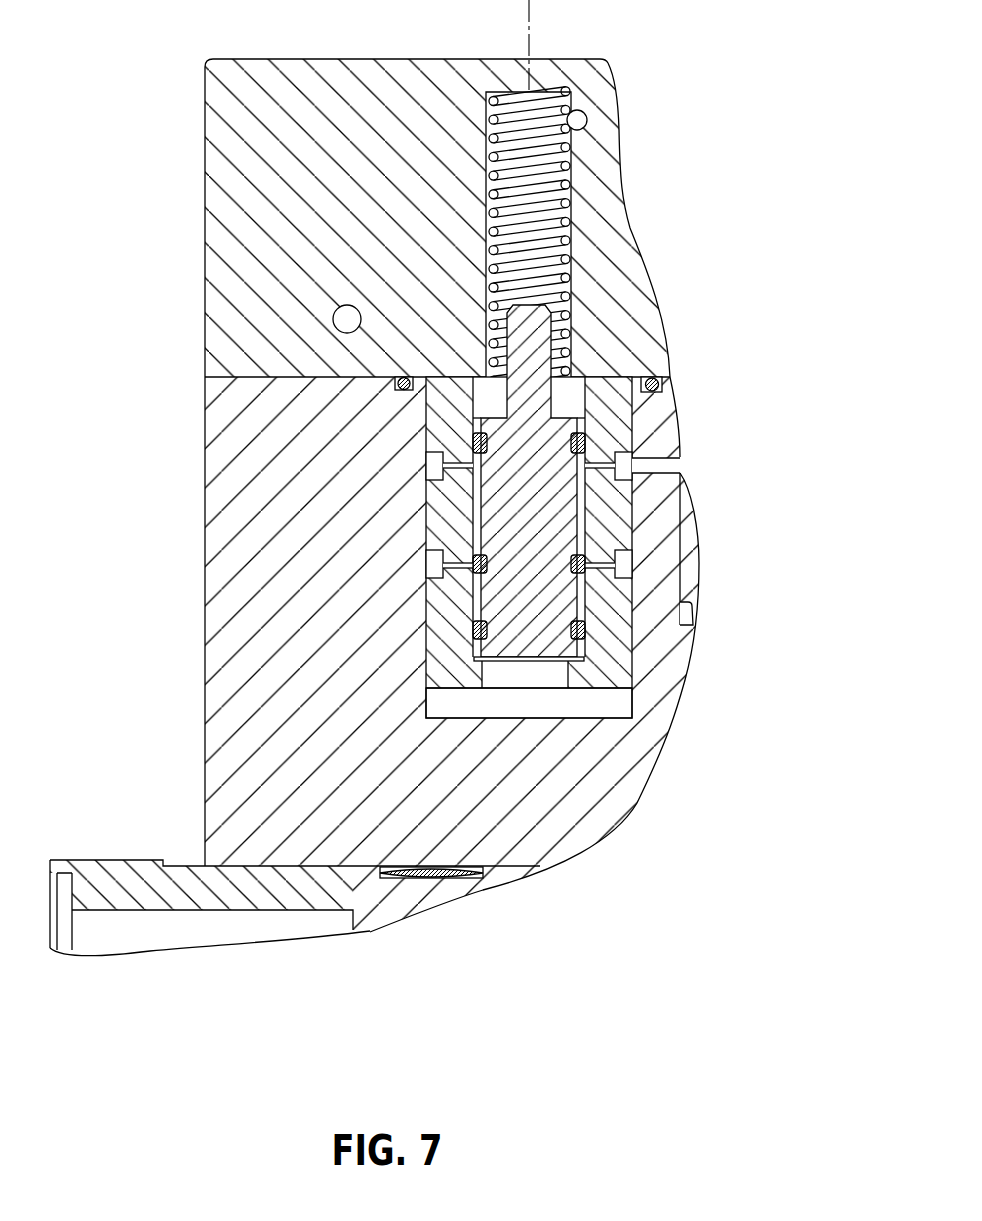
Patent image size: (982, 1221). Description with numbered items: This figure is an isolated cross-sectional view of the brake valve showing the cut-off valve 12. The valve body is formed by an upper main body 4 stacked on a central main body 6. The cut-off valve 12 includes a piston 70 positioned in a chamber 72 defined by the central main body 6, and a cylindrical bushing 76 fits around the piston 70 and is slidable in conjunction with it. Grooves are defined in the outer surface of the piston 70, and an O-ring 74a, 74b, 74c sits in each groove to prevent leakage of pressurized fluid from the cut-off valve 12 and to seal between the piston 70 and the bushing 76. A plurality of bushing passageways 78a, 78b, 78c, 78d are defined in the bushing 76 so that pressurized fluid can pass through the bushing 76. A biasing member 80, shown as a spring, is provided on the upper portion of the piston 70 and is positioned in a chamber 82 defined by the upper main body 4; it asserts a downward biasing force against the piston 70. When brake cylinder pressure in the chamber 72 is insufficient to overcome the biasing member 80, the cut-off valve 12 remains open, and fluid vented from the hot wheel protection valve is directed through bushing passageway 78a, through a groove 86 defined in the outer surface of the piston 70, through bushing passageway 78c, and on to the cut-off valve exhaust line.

The upper main body 4 is at (223, 177).
The central main body 6 is at (232, 640).
The cut-off valve 12 is at (604, 345).
The piston 70 is at (532, 637).
The chamber 72 is at (552, 710).
The O-ring 74a is at (582, 443).
The O-ring 74b is at (583, 558).
The O-ring 74c is at (583, 624).
The bushing 76 is at (435, 670).
The bushing passageway 78a is at (425, 462).
The bushing passageway 78b is at (643, 472).
The bushing passageway 78c is at (635, 560).
The bushing passageway 78d is at (427, 557).
The biasing member 80 is at (568, 184).
The chamber 82 is at (671, 393).
The groove 86 is at (427, 502).